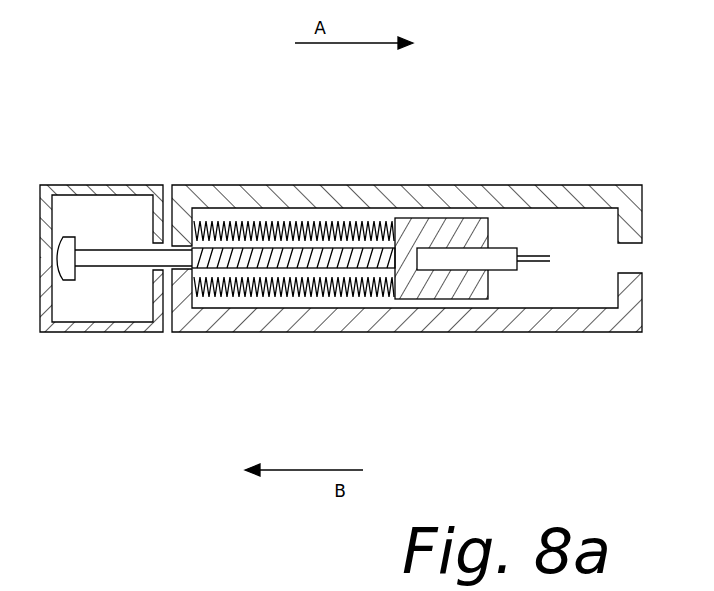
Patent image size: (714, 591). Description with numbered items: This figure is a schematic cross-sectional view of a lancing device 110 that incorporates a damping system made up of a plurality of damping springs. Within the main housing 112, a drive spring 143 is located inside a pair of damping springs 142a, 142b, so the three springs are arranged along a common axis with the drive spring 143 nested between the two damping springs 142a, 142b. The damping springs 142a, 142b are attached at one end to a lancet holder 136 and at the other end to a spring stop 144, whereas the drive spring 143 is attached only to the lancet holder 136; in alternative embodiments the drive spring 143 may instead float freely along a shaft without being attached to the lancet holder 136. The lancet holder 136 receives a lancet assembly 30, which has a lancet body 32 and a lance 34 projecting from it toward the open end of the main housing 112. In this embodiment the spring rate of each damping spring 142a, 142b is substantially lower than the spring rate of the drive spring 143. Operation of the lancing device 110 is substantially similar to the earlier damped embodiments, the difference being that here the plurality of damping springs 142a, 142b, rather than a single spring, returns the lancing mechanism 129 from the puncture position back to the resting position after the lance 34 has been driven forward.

The lancing device 110 is at (585, 115).
The main housing 112 is at (266, 332).
The lancing mechanism 129 is at (402, 307).
The lancet holder 136 is at (452, 218).
The damping spring 142a is at (212, 222).
The damping spring 142b is at (215, 298).
The drive spring 143 is at (313, 248).
The spring stop 144 is at (192, 222).
The lancet assembly 30 is at (503, 285).
The lancet body 32 is at (507, 248).
The lance 34 is at (540, 257).